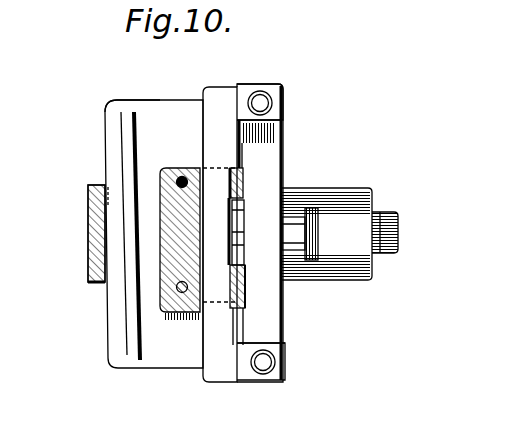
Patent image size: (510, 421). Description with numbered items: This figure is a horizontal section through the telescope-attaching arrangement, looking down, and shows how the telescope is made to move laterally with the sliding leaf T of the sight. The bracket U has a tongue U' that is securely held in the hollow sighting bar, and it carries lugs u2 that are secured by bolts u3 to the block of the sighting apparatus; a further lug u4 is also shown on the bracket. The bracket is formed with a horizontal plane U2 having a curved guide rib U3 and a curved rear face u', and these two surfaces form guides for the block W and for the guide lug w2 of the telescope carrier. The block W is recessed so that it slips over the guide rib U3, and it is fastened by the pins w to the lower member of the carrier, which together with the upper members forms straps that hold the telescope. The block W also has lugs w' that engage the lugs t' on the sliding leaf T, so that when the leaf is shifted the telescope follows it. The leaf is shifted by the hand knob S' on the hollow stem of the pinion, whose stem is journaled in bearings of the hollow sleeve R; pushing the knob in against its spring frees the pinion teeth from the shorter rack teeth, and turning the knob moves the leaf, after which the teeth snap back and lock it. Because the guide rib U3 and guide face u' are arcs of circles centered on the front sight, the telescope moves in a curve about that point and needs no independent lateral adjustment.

The bracket U is at (154, 251).
The curved rear face u' is at (106, 98).
The block W is at (178, 218).
The guide lug w2 is at (100, 287).
The horizontal plane U2 is at (180, 220).
The pins w is at (173, 244).
The curved guide rib U3 is at (212, 104).
The lugs of block w' is at (284, 233).
The lugs of bracket u2 is at (282, 84).
The bolts u3 is at (262, 104).
The lower screw lug u4 is at (285, 354).
The lugs of sliding leaf t' is at (271, 228).
The sliding leaf T is at (267, 271).
The hand knob S' is at (326, 234).
The hollow sleeve R is at (293, 223).
The tongue U' is at (403, 220).